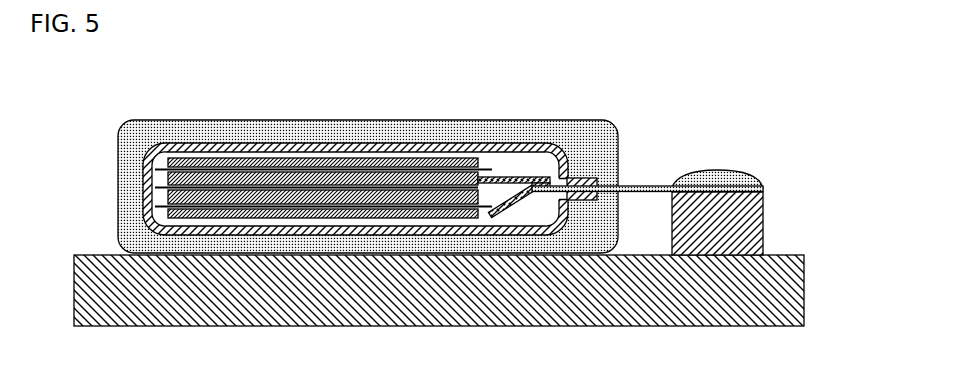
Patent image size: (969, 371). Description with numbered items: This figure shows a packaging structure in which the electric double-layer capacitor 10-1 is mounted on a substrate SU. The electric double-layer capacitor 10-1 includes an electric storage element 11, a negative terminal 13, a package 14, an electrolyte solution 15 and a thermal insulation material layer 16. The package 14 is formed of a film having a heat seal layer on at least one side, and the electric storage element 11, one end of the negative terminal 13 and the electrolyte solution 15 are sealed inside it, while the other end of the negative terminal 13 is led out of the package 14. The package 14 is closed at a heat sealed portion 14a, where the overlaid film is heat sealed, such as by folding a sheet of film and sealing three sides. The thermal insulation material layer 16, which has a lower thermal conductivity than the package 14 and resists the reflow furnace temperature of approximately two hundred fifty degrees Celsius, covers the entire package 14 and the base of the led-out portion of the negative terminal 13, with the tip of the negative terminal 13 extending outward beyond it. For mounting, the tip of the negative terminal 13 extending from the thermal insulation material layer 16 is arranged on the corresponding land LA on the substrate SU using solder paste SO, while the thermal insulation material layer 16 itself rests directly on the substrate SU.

The electric double-layer capacitor 10-1 is at (368, 162).
The electric storage element 11 is at (209, 158).
The negative terminal 13 is at (655, 186).
The package 14 is at (472, 143).
The heat sealed portion 14a is at (582, 170).
The electrolyte solution 15 is at (538, 163).
The thermal insulation material layer 16 is at (428, 130).
The solder paste SO is at (722, 173).
The substrate SU is at (650, 305).
The land LA is at (727, 237).